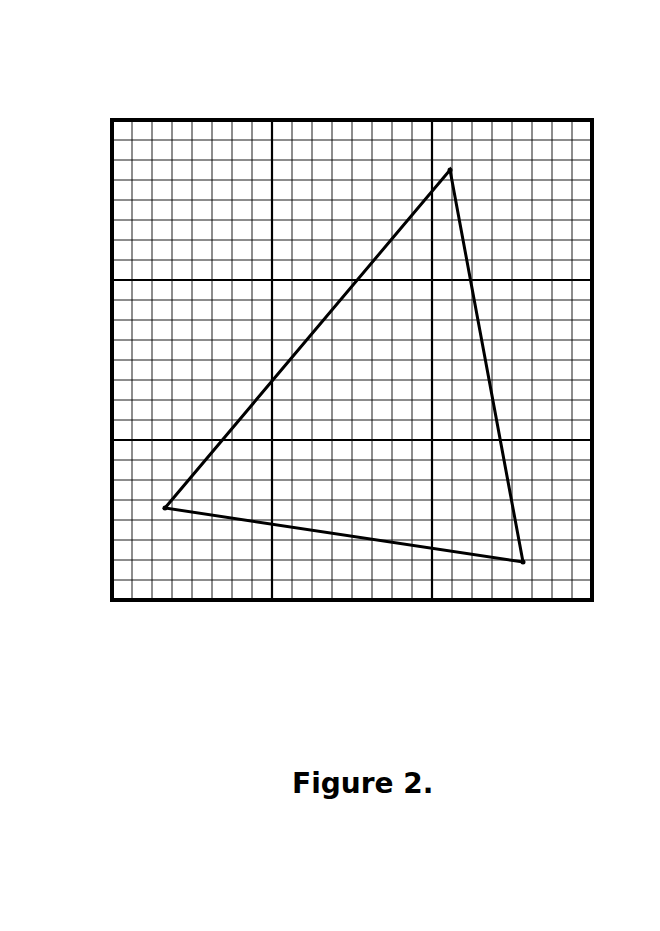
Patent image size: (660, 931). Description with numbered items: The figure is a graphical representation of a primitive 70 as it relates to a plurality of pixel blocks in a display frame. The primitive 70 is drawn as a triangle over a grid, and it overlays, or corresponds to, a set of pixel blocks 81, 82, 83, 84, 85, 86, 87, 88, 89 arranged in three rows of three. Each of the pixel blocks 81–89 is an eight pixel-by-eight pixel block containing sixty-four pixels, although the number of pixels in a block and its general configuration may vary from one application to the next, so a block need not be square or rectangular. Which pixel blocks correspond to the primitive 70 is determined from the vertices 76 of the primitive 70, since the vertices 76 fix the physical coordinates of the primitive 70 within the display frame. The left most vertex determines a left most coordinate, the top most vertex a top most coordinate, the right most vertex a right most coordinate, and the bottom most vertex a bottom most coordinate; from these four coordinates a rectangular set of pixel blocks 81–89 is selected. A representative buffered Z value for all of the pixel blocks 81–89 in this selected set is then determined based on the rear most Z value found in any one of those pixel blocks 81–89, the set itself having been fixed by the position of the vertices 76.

The primitive 70 is at (423, 548).
The vertices 76 is at (450, 170).
The pixel block 81 is at (192, 200).
The pixel block 82 is at (352, 200).
The pixel block 83 is at (512, 200).
The pixel block 84 is at (192, 360).
The pixel block 85 is at (512, 360).
The pixel block 86 is at (352, 360).
The pixel block 87 is at (192, 520).
The pixel block 88 is at (352, 520).
The pixel block 89 is at (512, 520).